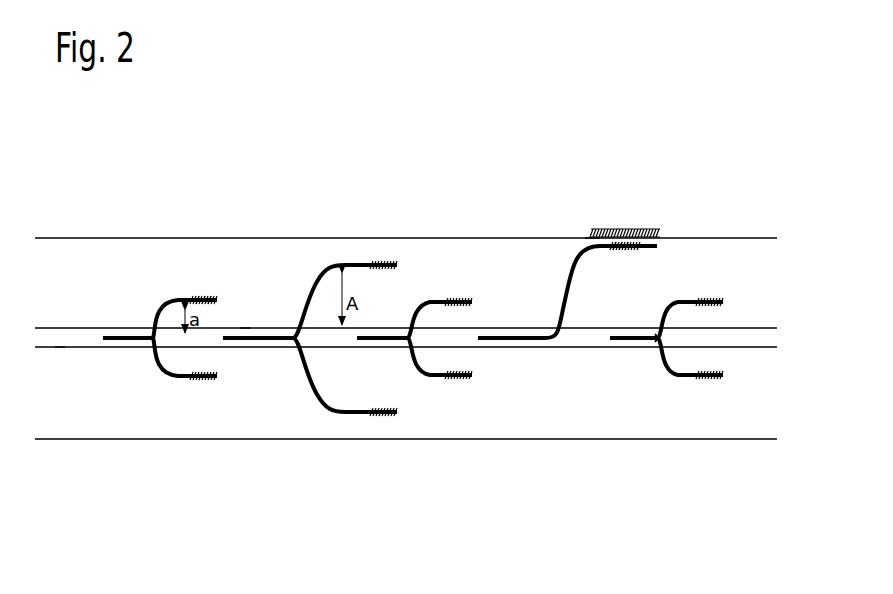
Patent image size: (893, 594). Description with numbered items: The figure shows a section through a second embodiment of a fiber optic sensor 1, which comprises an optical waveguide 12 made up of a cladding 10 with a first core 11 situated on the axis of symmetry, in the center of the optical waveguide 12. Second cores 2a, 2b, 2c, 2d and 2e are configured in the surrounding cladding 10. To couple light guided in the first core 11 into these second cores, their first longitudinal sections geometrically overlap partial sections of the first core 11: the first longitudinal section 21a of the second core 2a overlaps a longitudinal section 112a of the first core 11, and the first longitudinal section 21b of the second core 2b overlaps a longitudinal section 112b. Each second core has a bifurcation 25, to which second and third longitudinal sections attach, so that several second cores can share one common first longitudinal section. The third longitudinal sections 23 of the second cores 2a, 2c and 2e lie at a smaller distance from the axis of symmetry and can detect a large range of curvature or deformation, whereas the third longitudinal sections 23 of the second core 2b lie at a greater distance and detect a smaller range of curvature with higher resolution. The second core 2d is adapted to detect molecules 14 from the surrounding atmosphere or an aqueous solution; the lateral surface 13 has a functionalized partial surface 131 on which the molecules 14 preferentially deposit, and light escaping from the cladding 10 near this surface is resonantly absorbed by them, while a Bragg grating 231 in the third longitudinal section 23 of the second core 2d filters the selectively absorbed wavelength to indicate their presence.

The fiber optic sensor 1 is at (148, 185).
The second core 2a is at (138, 300).
The second core 2b is at (303, 277).
The second core 2c is at (431, 385).
The second core 2d is at (548, 262).
The second core 2e is at (655, 373).
The cladding 10 is at (560, 430).
The first core 11 is at (757, 346).
The optical waveguide 12 is at (300, 455).
The lateral surface 13 is at (489, 236).
The molecules 14 is at (652, 229).
The first longitudinal section 21a is at (125, 348).
The first longitudinal section 21b is at (264, 348).
The third longitudinal section 23 is at (188, 380).
The bifurcation 25 is at (664, 333).
The longitudinal section of the first core 112a is at (60, 347).
The longitudinal section of the first core 112b is at (243, 327).
The partial surface 131 is at (588, 236).
The Bragg grating 231 is at (203, 298).